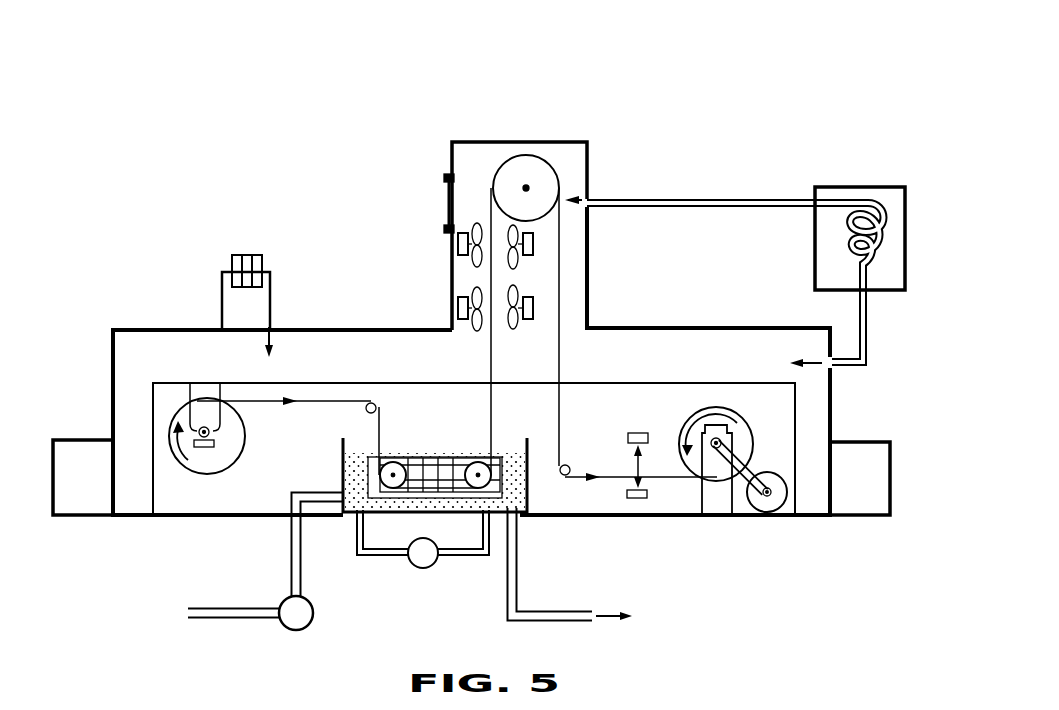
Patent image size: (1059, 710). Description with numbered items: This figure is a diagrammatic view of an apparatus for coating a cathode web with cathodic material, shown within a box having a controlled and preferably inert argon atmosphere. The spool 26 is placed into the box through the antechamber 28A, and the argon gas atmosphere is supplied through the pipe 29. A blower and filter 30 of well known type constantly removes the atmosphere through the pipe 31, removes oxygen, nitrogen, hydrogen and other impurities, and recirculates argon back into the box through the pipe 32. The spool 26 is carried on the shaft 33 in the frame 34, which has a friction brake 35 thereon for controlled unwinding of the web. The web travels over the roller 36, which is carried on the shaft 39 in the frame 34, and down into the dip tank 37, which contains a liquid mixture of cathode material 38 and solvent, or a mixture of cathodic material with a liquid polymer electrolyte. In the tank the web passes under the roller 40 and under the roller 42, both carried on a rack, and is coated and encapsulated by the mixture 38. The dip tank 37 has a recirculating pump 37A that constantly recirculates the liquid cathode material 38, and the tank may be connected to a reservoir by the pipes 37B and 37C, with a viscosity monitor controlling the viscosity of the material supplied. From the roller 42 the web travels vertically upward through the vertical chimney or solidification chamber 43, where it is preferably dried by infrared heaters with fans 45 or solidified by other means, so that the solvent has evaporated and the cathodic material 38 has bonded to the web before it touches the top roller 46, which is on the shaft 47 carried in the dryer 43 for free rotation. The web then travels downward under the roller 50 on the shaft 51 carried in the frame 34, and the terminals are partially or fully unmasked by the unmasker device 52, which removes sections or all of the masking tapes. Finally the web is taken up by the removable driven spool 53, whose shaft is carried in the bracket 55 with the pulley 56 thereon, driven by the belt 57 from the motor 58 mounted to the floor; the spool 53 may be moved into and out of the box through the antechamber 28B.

The spool 26 is at (222, 452).
The antechamber 28A is at (80, 440).
The antechamber 28B is at (886, 442).
The pipe 29 is at (862, 312).
The blower and filter 30 is at (249, 289).
The pipe 31 is at (222, 300).
The pipe 32 is at (272, 300).
The shaft 33 is at (203, 447).
The frame 34 is at (172, 503).
The friction brake 35 is at (214, 444).
The roller 36 is at (376, 402).
The dip tank 37 is at (435, 503).
The recirculating pump 37A is at (420, 560).
The pipe 37B is at (272, 606).
The pipe 37C is at (553, 608).
The cathode material 38 is at (452, 498).
The shaft 39 is at (366, 410).
The roller 40 is at (390, 462).
The roller 42 is at (475, 462).
The solidification chamber 43 is at (576, 129).
The fans 45 is at (458, 244).
The top roller 46 is at (551, 180).
The shaft 47 is at (525, 186).
The roller 50 is at (568, 465).
The shaft 51 is at (563, 476).
The unmasker device 52 is at (622, 425).
The driven spool 53 is at (741, 424).
The bracket 55 is at (718, 495).
The pulley 56 is at (700, 472).
The belt 57 is at (745, 477).
The motor 58 is at (776, 503).